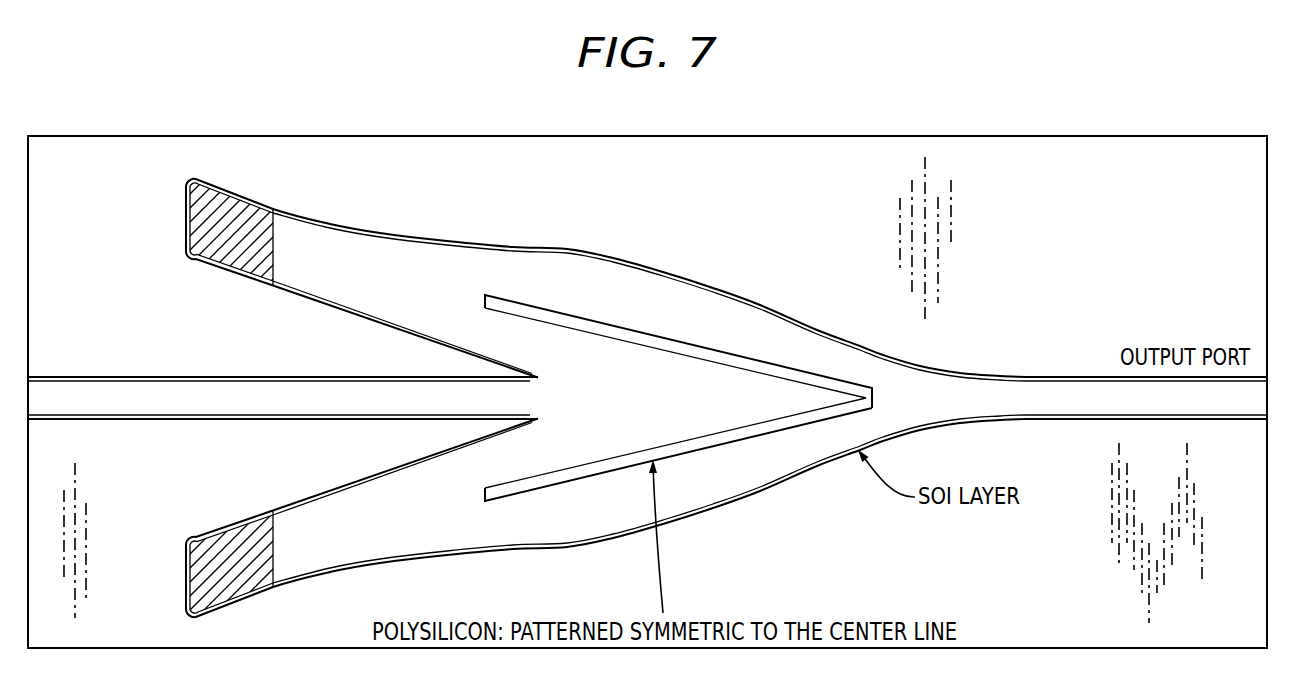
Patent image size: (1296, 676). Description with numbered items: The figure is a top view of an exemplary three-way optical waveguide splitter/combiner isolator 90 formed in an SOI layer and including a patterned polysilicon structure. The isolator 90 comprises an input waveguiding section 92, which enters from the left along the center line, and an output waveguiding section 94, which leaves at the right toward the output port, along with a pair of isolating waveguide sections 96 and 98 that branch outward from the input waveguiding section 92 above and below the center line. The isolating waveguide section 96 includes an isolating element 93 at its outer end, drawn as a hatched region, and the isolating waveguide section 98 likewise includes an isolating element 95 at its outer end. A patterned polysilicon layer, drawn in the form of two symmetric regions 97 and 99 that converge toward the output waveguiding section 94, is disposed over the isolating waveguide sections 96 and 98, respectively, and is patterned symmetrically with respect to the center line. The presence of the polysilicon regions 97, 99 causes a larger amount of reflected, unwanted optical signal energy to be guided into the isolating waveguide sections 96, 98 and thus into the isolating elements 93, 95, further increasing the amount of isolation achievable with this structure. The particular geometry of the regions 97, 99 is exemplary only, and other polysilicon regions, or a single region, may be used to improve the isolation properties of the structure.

The optical waveguide splitter/combiner isolator 90 is at (800, 507).
The input waveguiding section 92 is at (112, 378).
The isolating element 93 is at (235, 205).
The output waveguiding section 94 is at (1068, 387).
The isolating element 95 is at (232, 541).
The isolating waveguide section 96 is at (357, 240).
The polysilicon region 97 is at (680, 348).
The isolating waveguide section 98 is at (362, 555).
The polysilicon region 99 is at (563, 480).